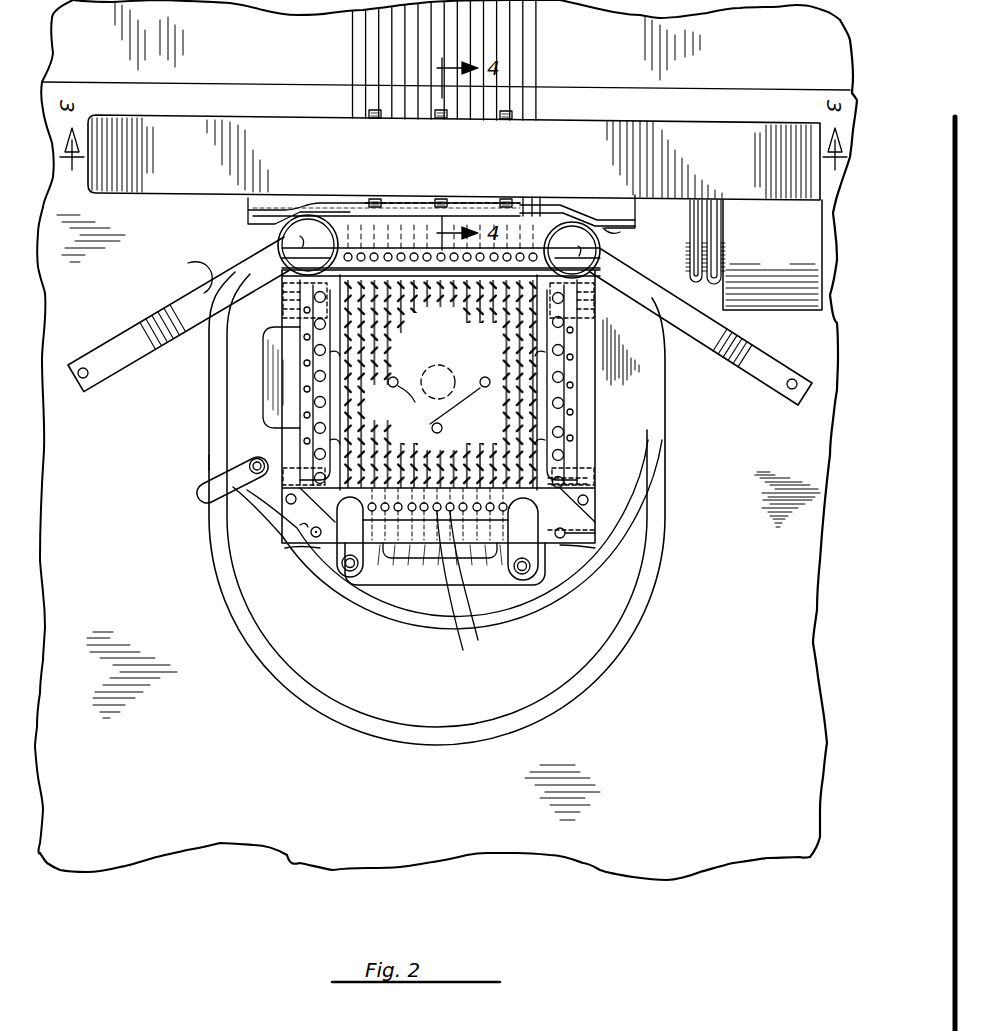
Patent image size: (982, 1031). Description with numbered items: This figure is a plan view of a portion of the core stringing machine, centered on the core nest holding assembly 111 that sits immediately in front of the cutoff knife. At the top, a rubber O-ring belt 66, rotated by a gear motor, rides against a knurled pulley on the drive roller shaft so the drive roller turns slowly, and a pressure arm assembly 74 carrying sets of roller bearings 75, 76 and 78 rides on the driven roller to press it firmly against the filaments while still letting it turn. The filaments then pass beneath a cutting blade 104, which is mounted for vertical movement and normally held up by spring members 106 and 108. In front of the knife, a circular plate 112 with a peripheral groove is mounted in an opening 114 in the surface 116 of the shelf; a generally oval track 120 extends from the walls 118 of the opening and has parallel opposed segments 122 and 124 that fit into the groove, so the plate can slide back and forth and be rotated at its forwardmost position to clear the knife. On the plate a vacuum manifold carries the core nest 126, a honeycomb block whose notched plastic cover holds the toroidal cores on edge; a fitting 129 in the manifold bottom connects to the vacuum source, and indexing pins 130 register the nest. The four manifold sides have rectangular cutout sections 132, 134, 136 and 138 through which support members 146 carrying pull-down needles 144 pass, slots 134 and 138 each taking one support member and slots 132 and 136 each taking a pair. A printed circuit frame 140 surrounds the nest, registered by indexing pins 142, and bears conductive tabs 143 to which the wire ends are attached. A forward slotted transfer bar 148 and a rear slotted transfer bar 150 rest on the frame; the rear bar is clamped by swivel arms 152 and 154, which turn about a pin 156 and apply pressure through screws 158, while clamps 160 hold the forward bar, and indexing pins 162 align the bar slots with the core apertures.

The rubber O-ring belt 66 is at (700, 273).
The pressure arm assembly 74 is at (236, 115).
The roller bearings 75 is at (372, 122).
The roller bearings 76 is at (441, 122).
The roller bearings 78 is at (506, 122).
The cutting blade 104 is at (526, 197).
The spring member 106 is at (322, 200).
The spring member 108 is at (548, 207).
The core nest holding assembly 111 is at (685, 655).
The circular plate 112 is at (632, 460).
The opening 114 is at (297, 645).
The surface 116 is at (498, 862).
The walls 118 is at (288, 690).
The track 120 is at (328, 705).
The opposed segment 122 is at (656, 501).
The opposed segment 124 is at (209, 460).
The core nest 126 is at (300, 360).
The fitting 129 is at (436, 366).
The indexing pins 130 is at (434, 413).
The rectangular cutout section 132 is at (600, 398).
The rectangular cutout section 134 is at (470, 622).
The rectangular cutout section 136 is at (270, 382).
The rectangular cutout section 138 is at (640, 376).
The printed circuit frame 140 is at (297, 527).
The indexing pins 142 is at (648, 526).
The conductive land areas or tabs 143 is at (600, 488).
The pull-down needles 144 is at (340, 414).
The support members 146 is at (300, 436).
The forward slotted transfer bar 148 is at (310, 536).
The rear slotted transfer bar 150 is at (442, 184).
The swivel arm 152 is at (142, 326).
The swivel arm 154 is at (742, 350).
The pin 156 is at (76, 396).
The screws 158 is at (278, 244).
The clamps 160 is at (190, 264).
The indexing pins 162 is at (300, 548).